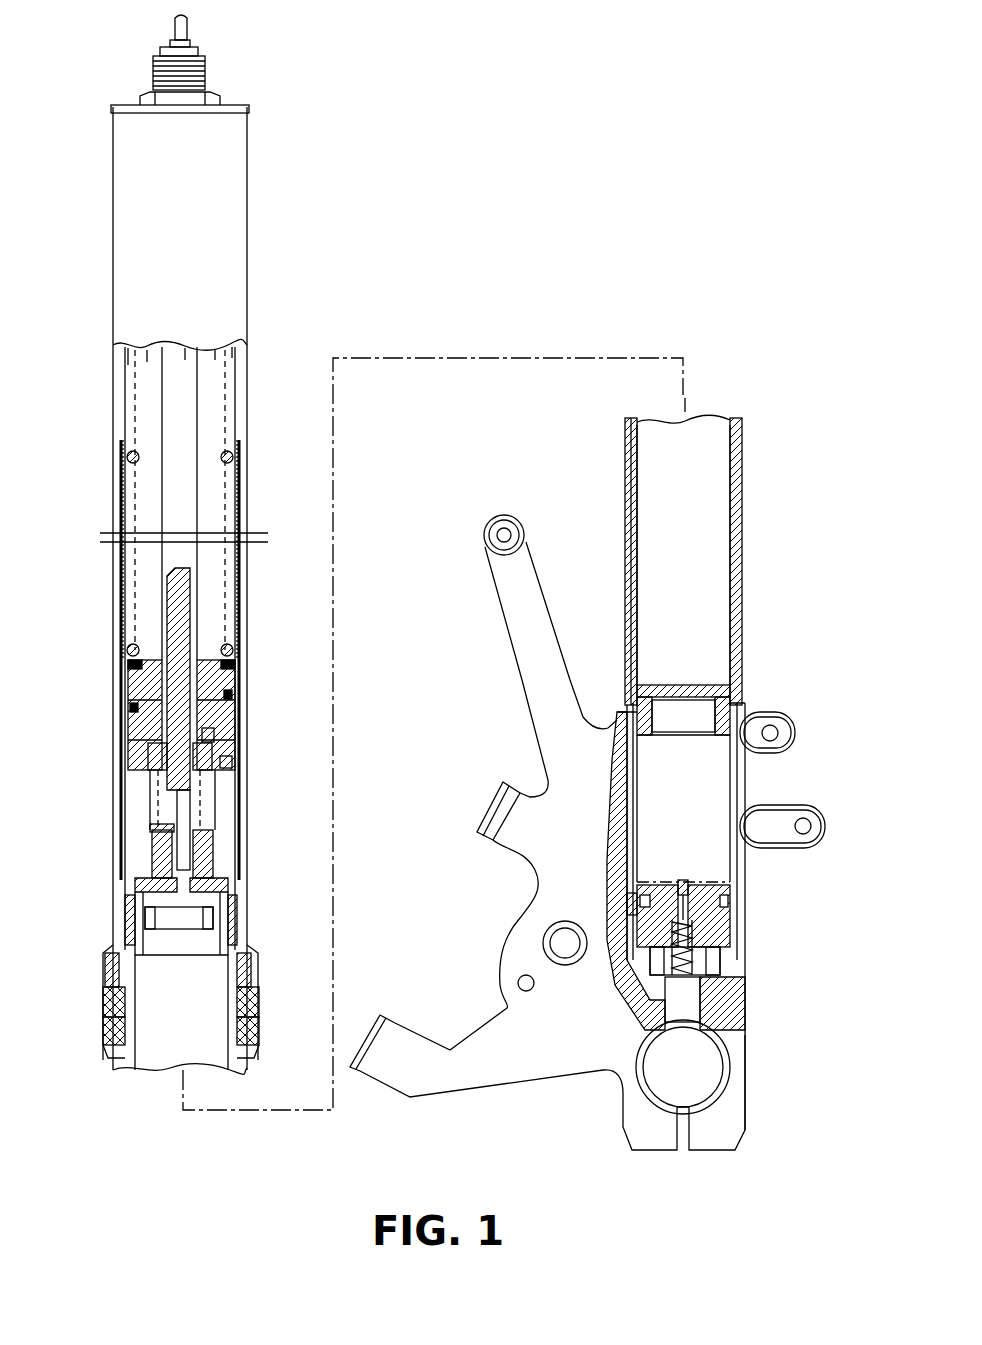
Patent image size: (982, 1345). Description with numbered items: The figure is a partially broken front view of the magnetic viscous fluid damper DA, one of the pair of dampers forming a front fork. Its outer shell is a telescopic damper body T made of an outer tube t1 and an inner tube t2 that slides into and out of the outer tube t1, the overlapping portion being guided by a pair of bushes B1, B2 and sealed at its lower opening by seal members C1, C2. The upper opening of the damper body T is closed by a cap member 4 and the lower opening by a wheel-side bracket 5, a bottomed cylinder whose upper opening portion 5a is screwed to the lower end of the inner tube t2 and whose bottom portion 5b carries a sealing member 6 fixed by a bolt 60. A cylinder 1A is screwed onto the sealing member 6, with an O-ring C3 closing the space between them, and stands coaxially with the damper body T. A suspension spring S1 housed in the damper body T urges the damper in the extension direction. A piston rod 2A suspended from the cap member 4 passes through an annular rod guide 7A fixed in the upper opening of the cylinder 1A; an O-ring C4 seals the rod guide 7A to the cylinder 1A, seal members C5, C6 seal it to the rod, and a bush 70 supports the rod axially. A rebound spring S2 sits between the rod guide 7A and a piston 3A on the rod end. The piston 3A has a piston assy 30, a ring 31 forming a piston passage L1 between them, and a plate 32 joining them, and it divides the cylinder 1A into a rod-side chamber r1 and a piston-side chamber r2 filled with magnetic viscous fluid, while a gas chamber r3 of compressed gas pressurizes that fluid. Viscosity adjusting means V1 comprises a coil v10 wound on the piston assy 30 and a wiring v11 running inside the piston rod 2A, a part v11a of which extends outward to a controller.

The damper body T is at (118, 388).
The part of the wiring v11a is at (173, 21).
The cap member 4 is at (232, 105).
The outer tube t1 is at (118, 560).
The bush B1 is at (121, 462).
The piston rod 2A is at (185, 515).
The suspension spring S1 is at (227, 452).
The wiring v11 is at (185, 618).
The rod guide 7A is at (130, 680).
The seal member C5 is at (232, 690).
The O-ring C4 is at (130, 708).
The seal member C6 is at (214, 735).
The bush 70 is at (150, 742).
The rebound spring S2 is at (226, 762).
The rod-side chamber r1 is at (210, 818).
The plate 32 is at (213, 835).
The viscosity adjusting means V1 is at (160, 832).
The ring 31 is at (150, 885).
The coil v10 is at (213, 915).
The piston 3A is at (130, 920).
The piston assy 30 is at (182, 962).
The bush B2 is at (251, 960).
The piston passage L1 is at (140, 958).
The seal member C2 is at (259, 1000).
The seal member C1 is at (256, 1045).
The magnetic viscous fluid damper DA is at (486, 269).
The inner tube t2 is at (745, 478).
The cylinder 1A is at (625, 440).
The piston-side chamber r2 is at (705, 538).
The upper opening portion 5a is at (765, 718).
The gas chamber r3 is at (713, 778).
The wheel-side bracket 5 is at (750, 862).
The O-ring C3 is at (627, 905).
The sealing member 6 is at (675, 882).
The bolt 60 is at (700, 948).
The bottom portion 5b is at (745, 1000).